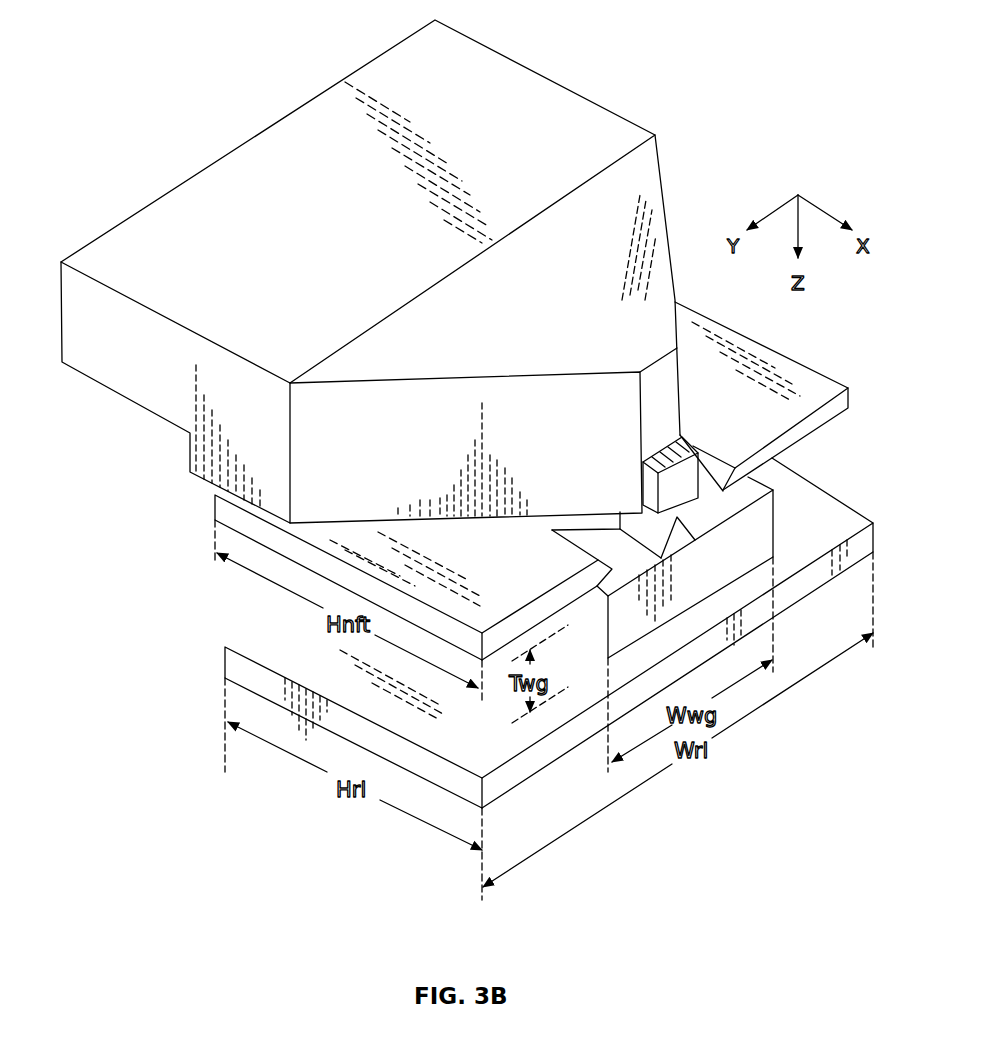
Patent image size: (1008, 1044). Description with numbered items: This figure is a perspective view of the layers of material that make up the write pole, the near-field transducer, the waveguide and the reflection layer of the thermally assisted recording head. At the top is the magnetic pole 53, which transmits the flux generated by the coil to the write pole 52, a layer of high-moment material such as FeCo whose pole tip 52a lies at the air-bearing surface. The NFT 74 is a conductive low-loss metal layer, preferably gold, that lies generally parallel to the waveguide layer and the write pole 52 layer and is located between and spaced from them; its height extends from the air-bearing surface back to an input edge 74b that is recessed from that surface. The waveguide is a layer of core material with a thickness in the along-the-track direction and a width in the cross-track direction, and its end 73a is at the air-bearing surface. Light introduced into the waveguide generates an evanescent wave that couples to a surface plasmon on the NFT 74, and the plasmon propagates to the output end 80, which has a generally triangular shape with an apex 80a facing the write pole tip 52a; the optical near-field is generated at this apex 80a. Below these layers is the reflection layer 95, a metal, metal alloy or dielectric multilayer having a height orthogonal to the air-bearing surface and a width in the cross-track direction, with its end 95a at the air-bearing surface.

The magnetic pole 53 is at (290, 132).
The near-field transducer (NFT) 74 is at (785, 365).
The input edge 74b is at (213, 510).
The write pole 52 is at (684, 437).
The write pole tip 52a is at (787, 449).
The waveguide end 73a is at (760, 515).
The output end 80 is at (642, 528).
The apex 80a is at (680, 517).
The reflection layer 95 is at (265, 635).
The reflection layer end 95a is at (785, 597).